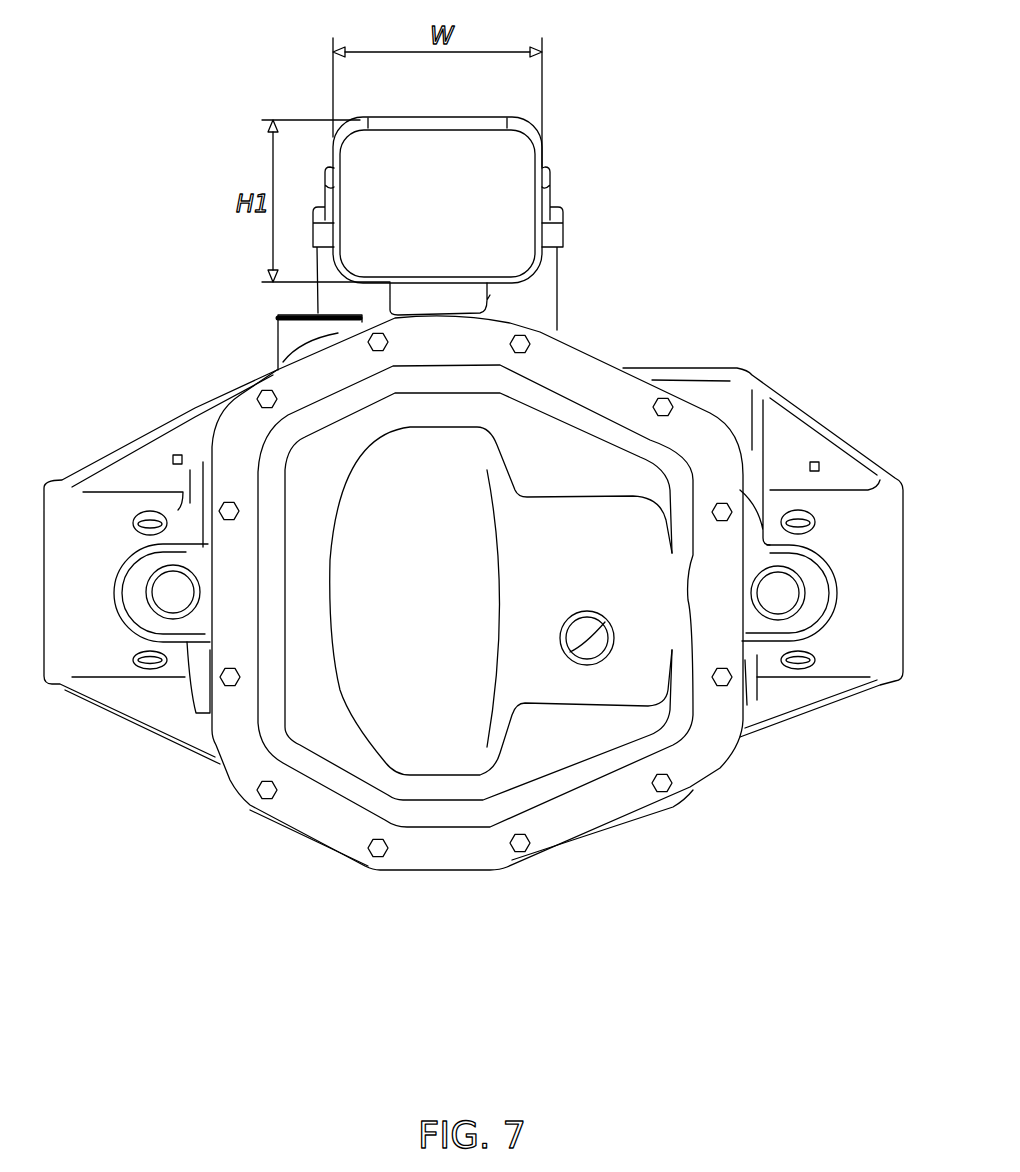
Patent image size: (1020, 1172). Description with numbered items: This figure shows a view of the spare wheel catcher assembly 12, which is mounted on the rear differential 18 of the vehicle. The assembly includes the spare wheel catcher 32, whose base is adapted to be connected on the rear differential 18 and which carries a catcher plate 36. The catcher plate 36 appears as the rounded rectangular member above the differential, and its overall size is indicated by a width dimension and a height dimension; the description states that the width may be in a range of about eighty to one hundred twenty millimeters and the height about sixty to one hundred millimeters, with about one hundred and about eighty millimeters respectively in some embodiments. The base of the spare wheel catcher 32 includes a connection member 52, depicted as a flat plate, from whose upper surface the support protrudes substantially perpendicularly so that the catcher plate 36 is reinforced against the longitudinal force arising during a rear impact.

The spare wheel catcher assembly 12 is at (502, 225).
The rear differential 18 is at (826, 428).
The spare wheel catcher 32 is at (544, 165).
The catcher plate 36 is at (515, 203).
The connection member 52 is at (562, 234).